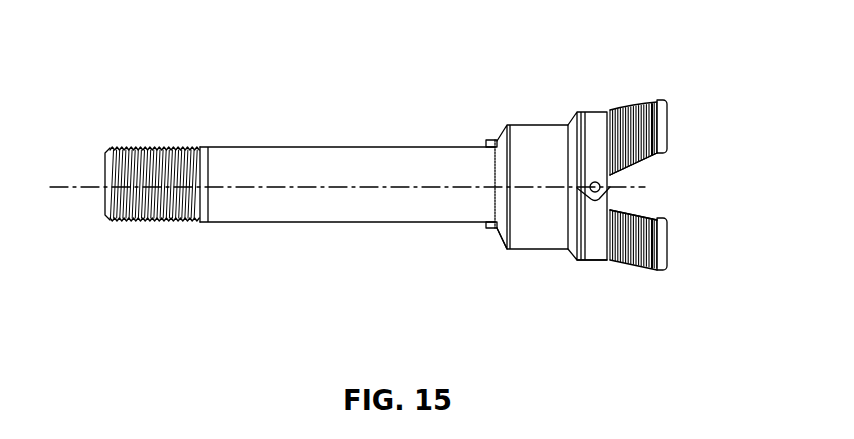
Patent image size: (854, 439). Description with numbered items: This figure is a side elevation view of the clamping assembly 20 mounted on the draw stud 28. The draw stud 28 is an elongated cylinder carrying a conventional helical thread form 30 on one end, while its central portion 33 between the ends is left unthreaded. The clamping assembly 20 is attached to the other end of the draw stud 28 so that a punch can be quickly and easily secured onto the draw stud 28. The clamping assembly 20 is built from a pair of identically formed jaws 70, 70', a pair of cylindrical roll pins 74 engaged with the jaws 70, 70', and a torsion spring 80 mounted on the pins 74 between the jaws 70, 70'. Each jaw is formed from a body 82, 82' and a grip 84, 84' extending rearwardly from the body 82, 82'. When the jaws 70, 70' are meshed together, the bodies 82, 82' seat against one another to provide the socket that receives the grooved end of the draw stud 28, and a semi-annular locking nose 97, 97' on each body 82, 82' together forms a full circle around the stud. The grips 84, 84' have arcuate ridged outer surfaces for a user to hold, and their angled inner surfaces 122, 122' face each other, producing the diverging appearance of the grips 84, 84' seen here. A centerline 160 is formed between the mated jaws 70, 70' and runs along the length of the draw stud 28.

The clamping assembly 20 is at (725, 53).
The draw stud 28 is at (412, 223).
The thread form 30 is at (157, 147).
The central portion 33 is at (333, 200).
The jaw 70 is at (581, 138).
The jaw 70' is at (564, 316).
The roll pin 74 is at (597, 193).
The torsion spring 80 is at (624, 187).
The body 82 is at (532, 161).
The body 82' is at (508, 281).
The grip 84 is at (644, 97).
The grip 84' is at (639, 271).
The locking nose 97 is at (477, 92).
The locking nose 97' is at (473, 260).
The inner surface 122 is at (670, 143).
The inner surface 122' is at (682, 228).
The centerline 160 is at (80, 187).